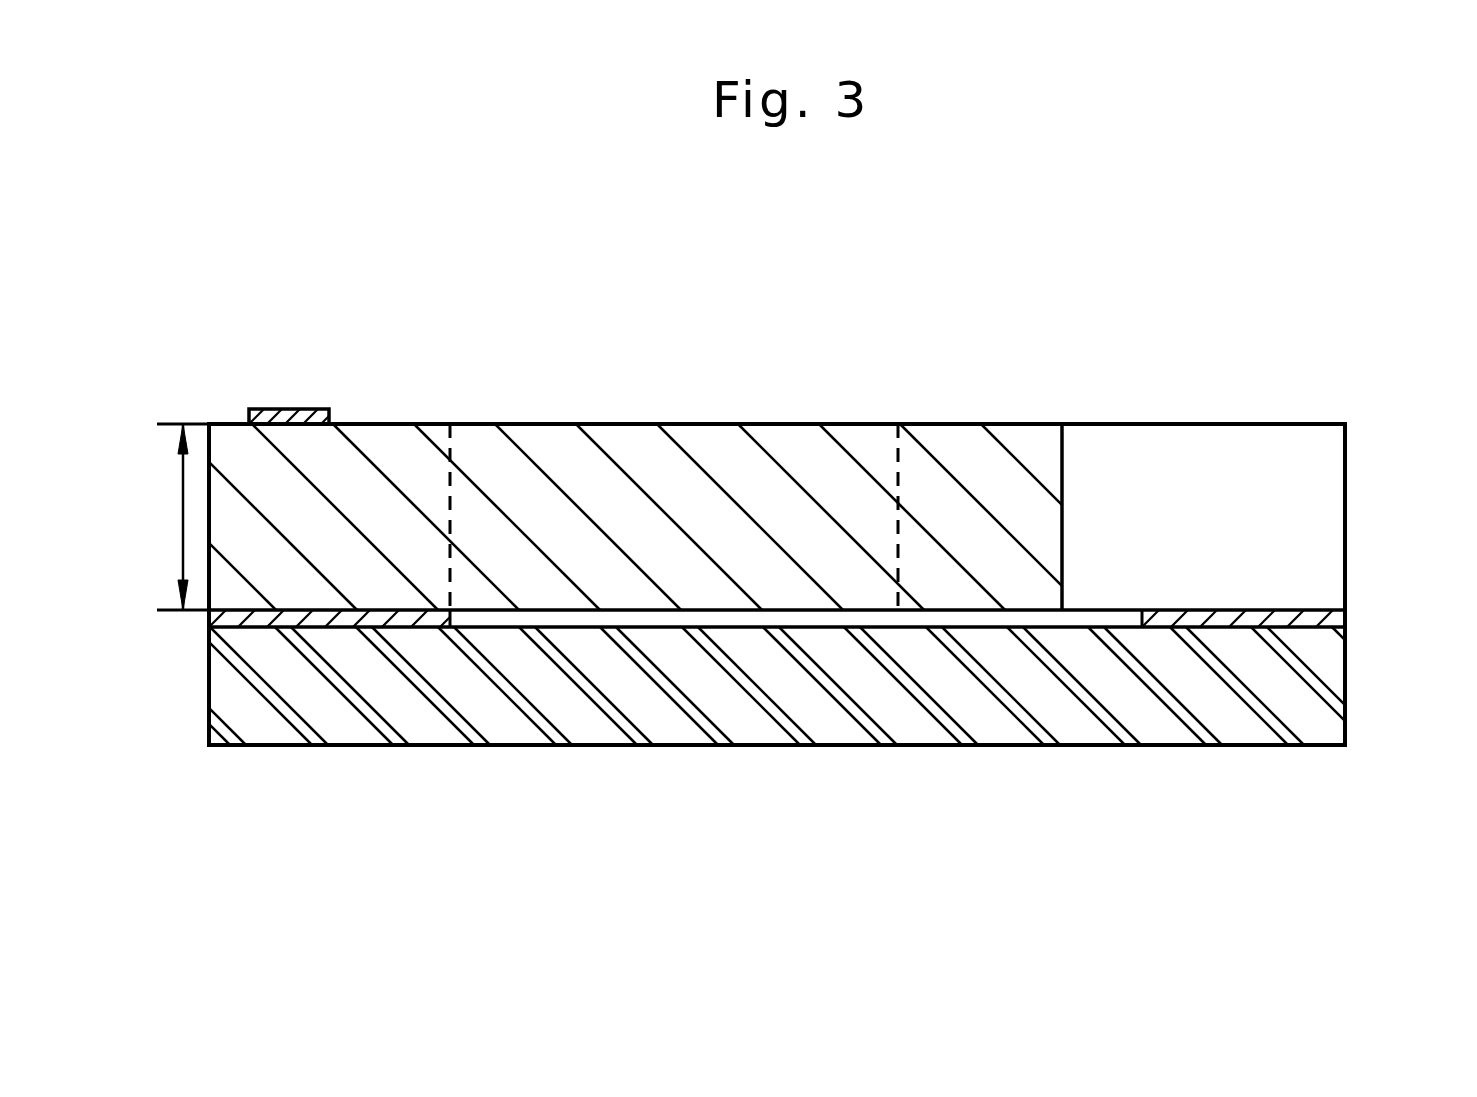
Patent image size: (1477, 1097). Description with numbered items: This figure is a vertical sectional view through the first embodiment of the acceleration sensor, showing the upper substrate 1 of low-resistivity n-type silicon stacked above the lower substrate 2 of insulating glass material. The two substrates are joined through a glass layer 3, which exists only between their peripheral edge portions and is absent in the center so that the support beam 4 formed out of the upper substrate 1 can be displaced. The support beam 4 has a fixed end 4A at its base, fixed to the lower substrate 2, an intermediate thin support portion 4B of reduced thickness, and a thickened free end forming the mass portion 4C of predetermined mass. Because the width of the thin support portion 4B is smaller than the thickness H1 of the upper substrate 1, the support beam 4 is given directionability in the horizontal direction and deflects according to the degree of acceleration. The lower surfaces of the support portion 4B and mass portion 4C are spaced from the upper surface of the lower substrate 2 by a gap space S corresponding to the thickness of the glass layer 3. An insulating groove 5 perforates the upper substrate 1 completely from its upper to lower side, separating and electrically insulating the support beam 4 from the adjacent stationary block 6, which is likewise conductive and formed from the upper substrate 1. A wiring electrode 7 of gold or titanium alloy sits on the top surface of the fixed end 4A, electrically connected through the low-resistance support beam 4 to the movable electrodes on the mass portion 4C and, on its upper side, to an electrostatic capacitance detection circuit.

The upper substrate 1 is at (1362, 521).
The lower substrate 2 is at (1337, 673).
The glass layer 3 is at (1333, 615).
The support beam 4 is at (618, 443).
The fixed end 4A is at (395, 455).
The thin support portion 4B is at (715, 450).
The mass portion 4C is at (948, 445).
The insulating groove 5 is at (1133, 473).
The stationary blocks 6 is at (1285, 422).
The wiring electrodes 7 is at (283, 415).
The gap space S is at (732, 615).
The thickness of the upper substrate H1 is at (168, 517).